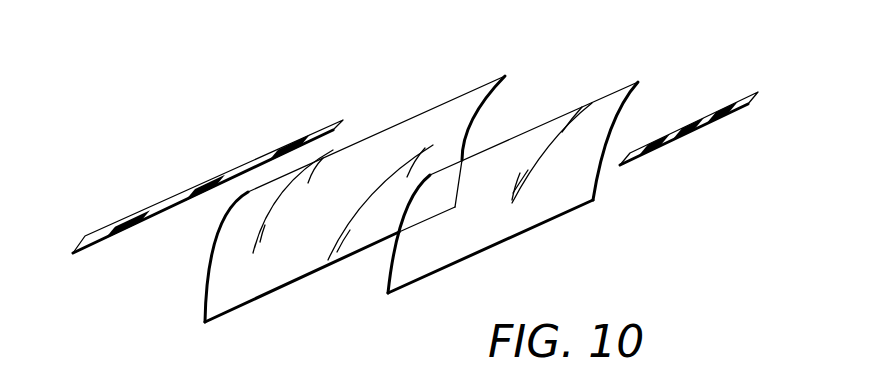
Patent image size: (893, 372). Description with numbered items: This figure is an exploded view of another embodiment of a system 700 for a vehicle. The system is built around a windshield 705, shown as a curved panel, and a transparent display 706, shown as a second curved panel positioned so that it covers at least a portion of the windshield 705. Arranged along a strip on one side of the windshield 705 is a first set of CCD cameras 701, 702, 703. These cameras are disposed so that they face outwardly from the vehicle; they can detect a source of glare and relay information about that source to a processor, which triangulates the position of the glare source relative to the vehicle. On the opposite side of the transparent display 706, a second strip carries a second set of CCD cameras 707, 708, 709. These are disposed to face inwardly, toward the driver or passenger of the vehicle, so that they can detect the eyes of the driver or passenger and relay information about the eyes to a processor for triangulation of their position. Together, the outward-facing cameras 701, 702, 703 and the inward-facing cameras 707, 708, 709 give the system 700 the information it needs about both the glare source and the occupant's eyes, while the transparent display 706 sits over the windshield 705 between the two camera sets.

The system 700 is at (157, 80).
The CCD camera 701 is at (130, 212).
The CCD camera 702 is at (210, 180).
The CCD camera 703 is at (288, 142).
The windshield 705 is at (435, 113).
The transparent display 706 is at (503, 233).
The CCD camera 707 is at (650, 155).
The CCD camera 708 is at (685, 138).
The CCD camera 709 is at (720, 125).